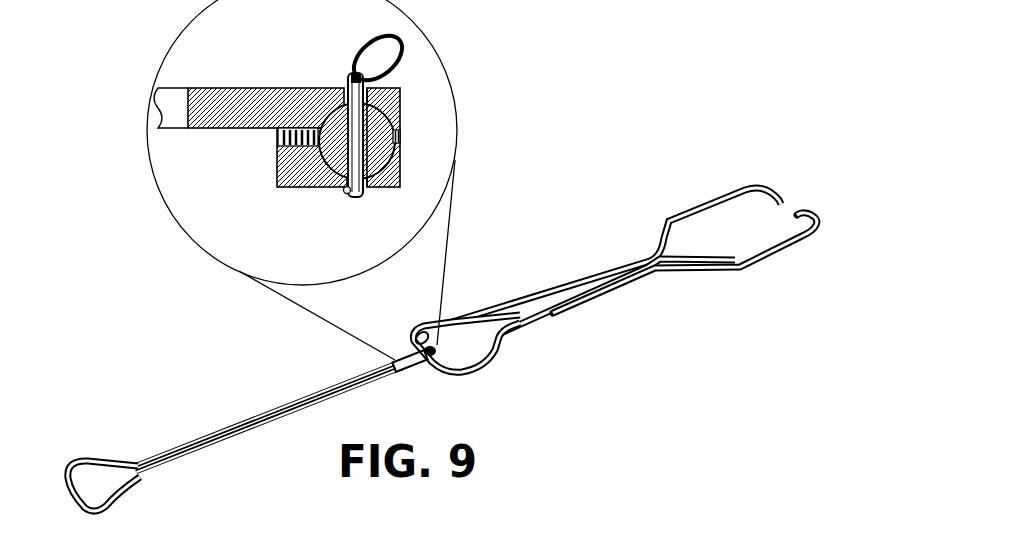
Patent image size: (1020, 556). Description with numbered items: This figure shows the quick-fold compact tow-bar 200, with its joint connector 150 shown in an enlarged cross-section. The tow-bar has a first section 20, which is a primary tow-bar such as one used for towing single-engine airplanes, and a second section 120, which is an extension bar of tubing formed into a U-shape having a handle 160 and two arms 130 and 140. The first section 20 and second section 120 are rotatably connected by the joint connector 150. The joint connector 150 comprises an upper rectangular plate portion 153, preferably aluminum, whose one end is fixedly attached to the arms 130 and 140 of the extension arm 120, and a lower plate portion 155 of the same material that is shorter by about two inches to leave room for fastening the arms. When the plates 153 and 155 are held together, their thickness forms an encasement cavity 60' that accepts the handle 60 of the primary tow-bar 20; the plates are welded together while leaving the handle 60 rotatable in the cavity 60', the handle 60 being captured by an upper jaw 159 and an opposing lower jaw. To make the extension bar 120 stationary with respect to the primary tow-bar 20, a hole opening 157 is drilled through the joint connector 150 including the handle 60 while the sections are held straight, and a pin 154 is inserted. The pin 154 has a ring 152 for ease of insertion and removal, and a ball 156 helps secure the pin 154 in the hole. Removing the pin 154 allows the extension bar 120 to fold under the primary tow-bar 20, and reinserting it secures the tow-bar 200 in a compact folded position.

The quick-fold compact tow-bar 200 is at (577, 93).
The first section 20 is at (563, 275).
The handle 60 is at (450, 230).
The encasement cavity 60' is at (402, 136).
The second section 120 is at (273, 383).
The arm 130 is at (253, 427).
The arm 140 is at (212, 435).
The joint connector 150 is at (394, 342).
The ring 152 is at (372, 47).
The upper rectangular plate portion 153 is at (228, 87).
The pin 154 is at (366, 190).
The lower plate portion 155 is at (290, 186).
The ball 156 is at (345, 193).
The hole opening 157 is at (346, 93).
The upper jaw 159 is at (283, 141).
The handle 160 is at (112, 508).